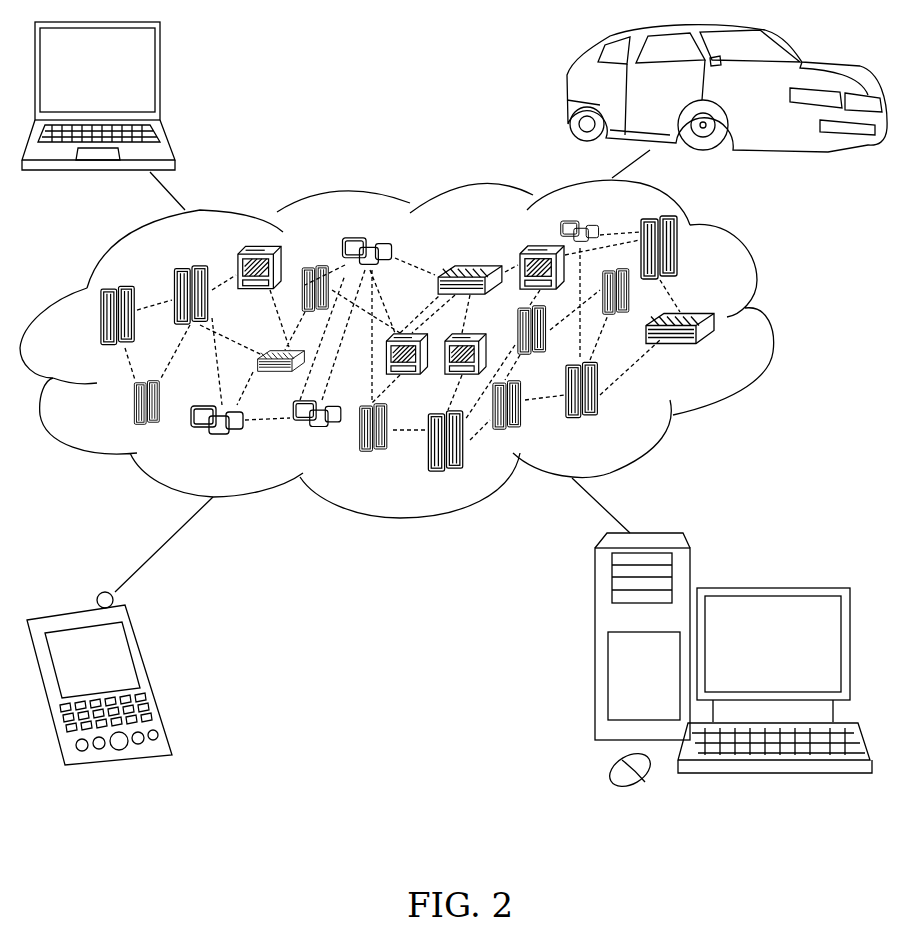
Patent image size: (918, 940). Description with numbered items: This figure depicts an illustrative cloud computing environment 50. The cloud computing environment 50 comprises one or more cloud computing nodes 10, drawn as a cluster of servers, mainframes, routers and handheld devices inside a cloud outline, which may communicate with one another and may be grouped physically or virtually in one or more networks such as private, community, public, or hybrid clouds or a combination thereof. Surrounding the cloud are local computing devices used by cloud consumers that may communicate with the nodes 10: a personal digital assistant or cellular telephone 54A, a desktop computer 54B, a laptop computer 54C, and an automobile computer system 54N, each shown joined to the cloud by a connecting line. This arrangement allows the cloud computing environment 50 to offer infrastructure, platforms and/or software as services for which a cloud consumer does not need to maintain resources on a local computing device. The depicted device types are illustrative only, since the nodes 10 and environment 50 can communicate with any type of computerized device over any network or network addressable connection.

The cloud computing node 10 is at (717, 350).
The cloud computing environment 50 is at (770, 323).
The personal digital assistant or cellular telephone 54A is at (150, 668).
The desktop computer 54B is at (770, 588).
The laptop computer 54C is at (160, 75).
The automobile computer system 54N is at (566, 90).